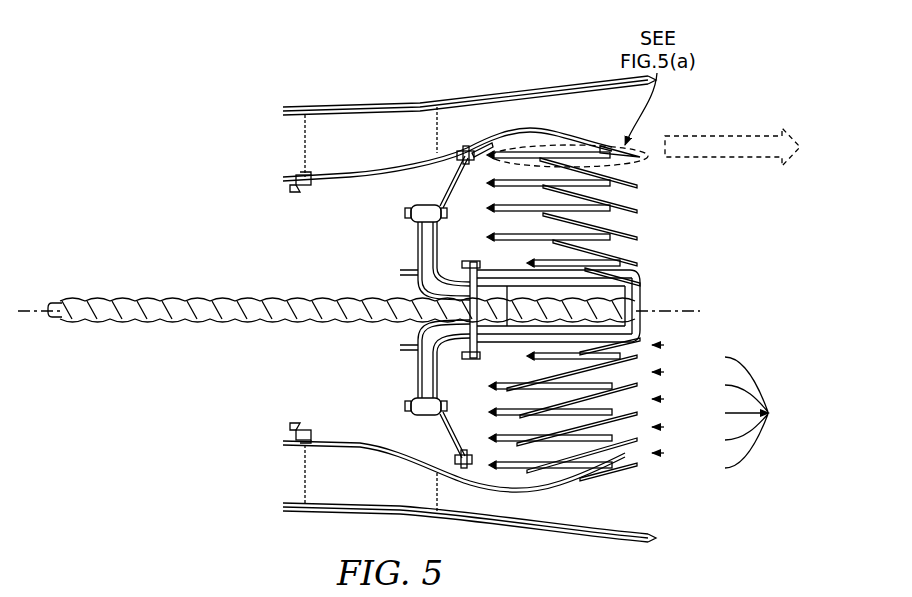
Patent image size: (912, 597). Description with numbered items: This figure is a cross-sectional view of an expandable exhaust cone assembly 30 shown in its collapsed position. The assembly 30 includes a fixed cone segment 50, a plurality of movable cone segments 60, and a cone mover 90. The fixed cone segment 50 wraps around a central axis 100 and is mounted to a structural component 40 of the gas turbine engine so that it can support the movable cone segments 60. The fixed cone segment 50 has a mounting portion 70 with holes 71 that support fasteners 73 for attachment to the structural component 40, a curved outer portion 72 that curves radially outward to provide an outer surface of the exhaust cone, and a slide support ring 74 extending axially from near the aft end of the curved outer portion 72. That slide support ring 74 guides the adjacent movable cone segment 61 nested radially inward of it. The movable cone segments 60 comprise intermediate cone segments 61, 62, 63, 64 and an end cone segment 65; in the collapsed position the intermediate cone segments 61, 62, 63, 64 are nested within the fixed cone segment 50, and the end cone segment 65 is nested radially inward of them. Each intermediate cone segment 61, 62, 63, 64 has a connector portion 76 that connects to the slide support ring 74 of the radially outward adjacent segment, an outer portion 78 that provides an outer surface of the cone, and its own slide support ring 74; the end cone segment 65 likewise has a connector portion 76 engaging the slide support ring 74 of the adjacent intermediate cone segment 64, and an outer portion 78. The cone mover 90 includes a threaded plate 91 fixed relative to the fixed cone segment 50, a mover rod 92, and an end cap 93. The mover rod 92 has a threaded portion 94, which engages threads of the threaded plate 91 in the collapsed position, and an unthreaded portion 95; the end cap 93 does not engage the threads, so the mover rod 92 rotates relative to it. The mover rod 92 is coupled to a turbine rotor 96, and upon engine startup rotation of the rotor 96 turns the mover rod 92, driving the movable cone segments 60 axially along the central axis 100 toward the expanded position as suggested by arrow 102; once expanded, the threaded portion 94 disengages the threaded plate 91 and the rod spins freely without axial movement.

The expandable exhaust cone assembly 30 is at (743, 71).
The structural component 40 is at (348, 163).
The fixed cone segment 50 is at (628, 489).
The plurality of movable cone segments 60 is at (767, 412).
The intermediate cone segment 61 is at (664, 453).
The intermediate cone segment 62 is at (664, 427).
The intermediate cone segment 63 is at (664, 399).
The intermediate cone segment 64 is at (664, 372).
The end cone segment 65 is at (664, 345).
The mounting portion 70 is at (461, 136).
The holes 71 is at (472, 146).
The curved outer portion 72 is at (527, 126).
The fasteners 73 is at (485, 146).
The slide support ring 74 is at (566, 145).
The connector portion 76 is at (511, 165).
The outer portion 78 is at (638, 200).
The cone mover 90 is at (172, 400).
The threaded plate 91 is at (446, 324).
The mover rod 92 is at (108, 222).
The end cap 93 is at (653, 303).
The threaded portion 94 is at (126, 297).
The unthreaded portion 95 is at (60, 297).
The turbine rotor 96 is at (423, 292).
The central axis 100 is at (37, 322).
The arrow 102 is at (725, 134).